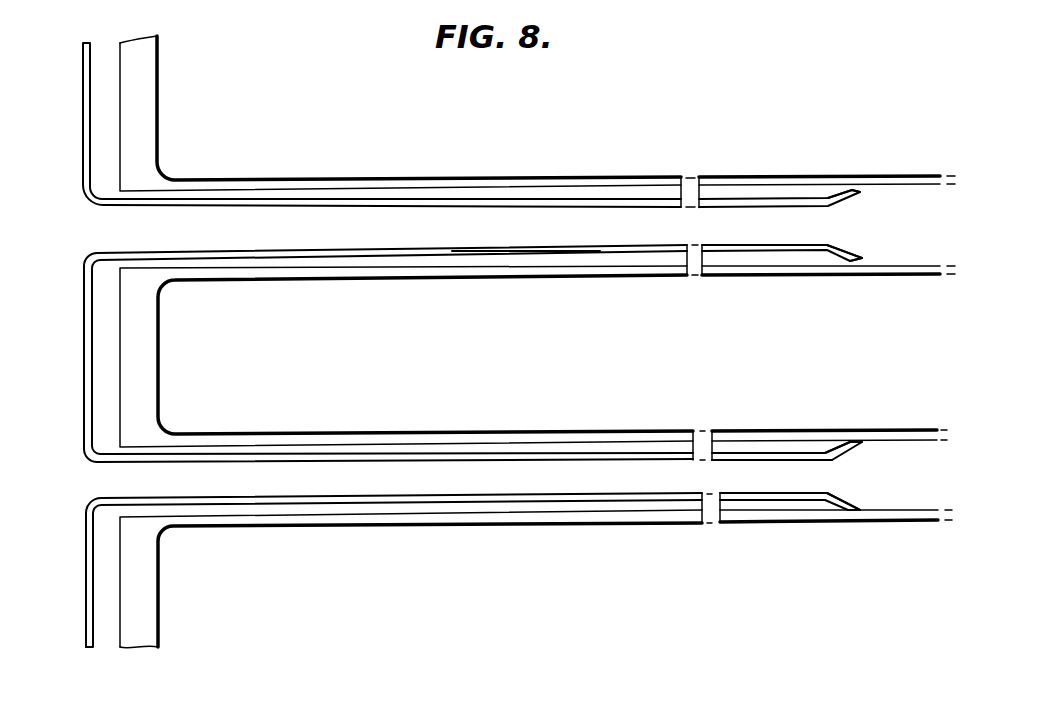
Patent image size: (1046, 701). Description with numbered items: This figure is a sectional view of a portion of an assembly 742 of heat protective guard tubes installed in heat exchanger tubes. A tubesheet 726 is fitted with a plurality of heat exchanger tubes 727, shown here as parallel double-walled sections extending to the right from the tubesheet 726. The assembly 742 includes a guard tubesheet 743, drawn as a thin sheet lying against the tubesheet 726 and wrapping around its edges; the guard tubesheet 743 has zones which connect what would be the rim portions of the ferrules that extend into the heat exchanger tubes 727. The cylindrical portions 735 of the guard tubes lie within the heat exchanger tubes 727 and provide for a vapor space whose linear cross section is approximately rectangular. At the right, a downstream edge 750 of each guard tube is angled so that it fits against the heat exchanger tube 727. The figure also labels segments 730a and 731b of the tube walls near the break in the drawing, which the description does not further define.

The tubesheet 726 is at (152, 95).
The heat exchanger tube 727 is at (905, 177).
The conductor segment 730a is at (874, 272).
The conductor segment 731b is at (757, 462).
The cylindrical portion 735 is at (420, 200).
The assembly of guard tubes 742 is at (84, 374).
The guard tubesheet 743 is at (83, 122).
The downstream edge 750 is at (837, 205).